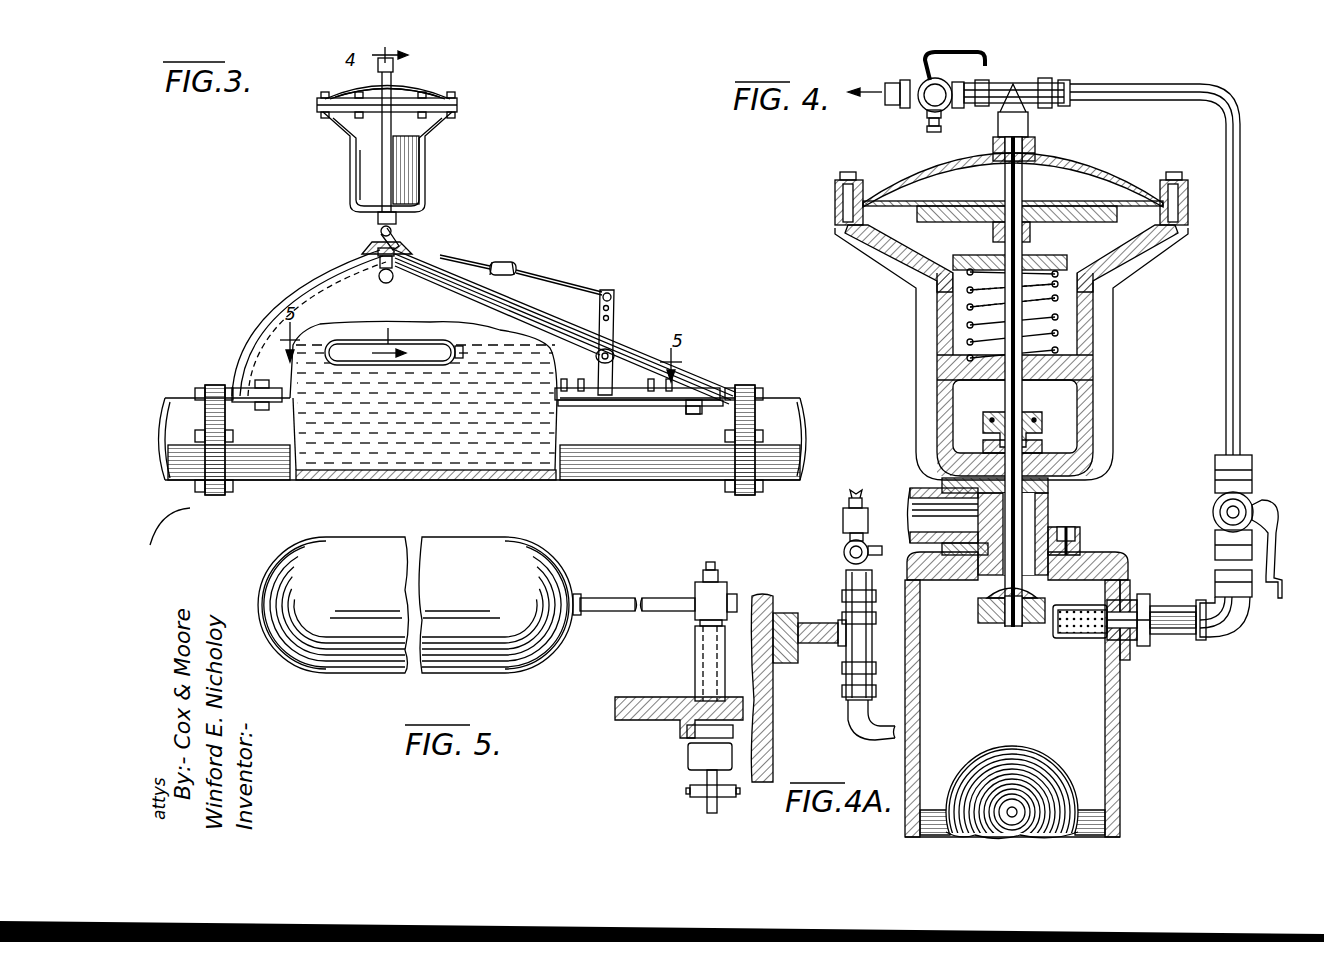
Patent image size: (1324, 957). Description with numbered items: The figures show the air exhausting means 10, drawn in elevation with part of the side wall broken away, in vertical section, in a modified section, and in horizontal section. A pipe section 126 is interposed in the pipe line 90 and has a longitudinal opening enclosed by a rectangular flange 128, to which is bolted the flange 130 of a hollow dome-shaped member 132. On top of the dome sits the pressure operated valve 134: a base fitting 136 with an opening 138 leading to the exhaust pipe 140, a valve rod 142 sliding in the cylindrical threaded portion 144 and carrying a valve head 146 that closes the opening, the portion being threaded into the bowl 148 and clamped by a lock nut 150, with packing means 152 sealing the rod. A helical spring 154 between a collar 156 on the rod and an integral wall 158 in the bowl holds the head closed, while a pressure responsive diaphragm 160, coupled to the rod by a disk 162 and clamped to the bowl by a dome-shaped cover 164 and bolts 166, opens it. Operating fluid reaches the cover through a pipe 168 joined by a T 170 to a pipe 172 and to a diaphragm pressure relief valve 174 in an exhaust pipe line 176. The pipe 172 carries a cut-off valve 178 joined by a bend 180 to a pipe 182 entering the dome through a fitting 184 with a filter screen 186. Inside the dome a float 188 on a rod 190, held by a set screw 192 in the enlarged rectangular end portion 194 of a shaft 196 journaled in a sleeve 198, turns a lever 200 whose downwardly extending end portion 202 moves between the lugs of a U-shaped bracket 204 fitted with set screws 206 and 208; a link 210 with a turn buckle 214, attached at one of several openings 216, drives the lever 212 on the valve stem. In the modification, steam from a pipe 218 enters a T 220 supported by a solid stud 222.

In FIG. 3, the air exhausting means 10 is at (614, 276).
In FIG. 4, the air exhausting means 10 is at (1257, 327).
In FIG. 3, the pipe line 90 is at (800, 470).
In FIG. 3, the pipe section 126 is at (598, 470).
In FIG. 3, the rectangular flange 128 is at (672, 405).
In FIG. 3, the flange 130 is at (726, 398).
In FIG. 3, the dome-shaped member 132 is at (450, 275).
In FIG. 5, the dome-shaped member 132 is at (640, 710).
In FIG. 4A, the dome-shaped member 132 is at (775, 765).
In FIG. 4, the dome-shaped member 132 is at (920, 705).
In FIG. 3, the pressure operated valve 134 is at (438, 172).
In FIG. 4, the base fitting 136 is at (1050, 495).
In FIG. 4, the opening 138 is at (1030, 535).
In FIG. 4, the exhaust pipe 140 is at (918, 490).
In FIG. 4, the valve rod 142 is at (1022, 397).
In FIG. 4, the cylindrical threaded portion 144 is at (1042, 447).
In FIG. 4, the valve head 146 is at (980, 622).
In FIG. 3, the bowl 148 is at (365, 196).
In FIG. 4, the bowl 148 is at (937, 334).
In FIG. 4, the lock nut 150 is at (985, 450).
In FIG. 4, the packing means 152 is at (1042, 420).
In FIG. 4, the helical spring 154 is at (1058, 312).
In FIG. 4, the collar 156 is at (1045, 258).
In FIG. 4, the wall 158 is at (1062, 365).
In FIG. 4, the pressure responsive diaphragm 160 is at (892, 240).
In FIG. 4, the disk 162 is at (918, 278).
In FIG. 3, the dome-shaped cover 164 is at (418, 96).
In FIG. 4, the dome-shaped cover 164 is at (1105, 172).
In FIG. 4, the bolts 166 is at (1178, 174).
In FIG. 4, the pipe 168 is at (1035, 152).
In FIG. 4, the T 170 is at (1018, 84).
In FIG. 3, the pipe 172 is at (382, 165).
In FIG. 4A, the pipe 172 is at (848, 506).
In FIG. 4, the pipe 172 is at (1136, 84).
In FIG. 4, the diaphragm pressure relief valve 174 is at (930, 82).
In FIG. 4, the exhaust pipe line 176 is at (926, 110).
In FIG. 4A, the cut-off valve 178 is at (843, 552).
In FIG. 4, the cut-off valve 178 is at (1212, 512).
In FIG. 3, the bend 180 is at (380, 282).
In FIG. 4, the bend 180 is at (1212, 612).
In FIG. 4, the pipe 182 is at (1178, 634).
In FIG. 4, the fitting 184 is at (1107, 628).
In FIG. 4, the filter screen 186 is at (1060, 637).
In FIG. 3, the float 188 is at (440, 335).
In FIG. 5, the float 188 is at (480, 548).
In FIG. 4, the float 188 is at (1012, 748).
In FIG. 5, the rod 190 is at (612, 598).
In FIG. 5, the set screw 192 is at (712, 566).
In FIG. 5, the enlarged rectangular end portion 194 is at (702, 596).
In FIG. 5, the shaft 196 is at (700, 622).
In FIG. 5, the sleeve 198 is at (697, 660).
In FIG. 3, the lever 200 is at (615, 320).
In FIG. 5, the lever 200 is at (700, 792).
In FIG. 3, the downwardly extending end portion 202 is at (614, 380).
In FIG. 3, the U-shaped bracket 204 is at (614, 406).
In FIG. 3, the set screw 206 is at (672, 392).
In FIG. 3, the set screw 208 is at (566, 380).
In FIG. 3, the link 210 is at (555, 284).
In FIG. 4, the link 210 is at (1278, 600).
In FIG. 3, the lever 212 is at (405, 240).
In FIG. 4A, the lever 212 is at (876, 545).
In FIG. 4, the lever 212 is at (1264, 508).
In FIG. 3, the turn buckle 214 is at (518, 268).
In FIG. 3, the openings 216 is at (614, 297).
In FIG. 4A, the pipe 218 is at (858, 725).
In FIG. 4A, the T 220 is at (848, 628).
In FIG. 4A, the solid stud 222 is at (818, 648).